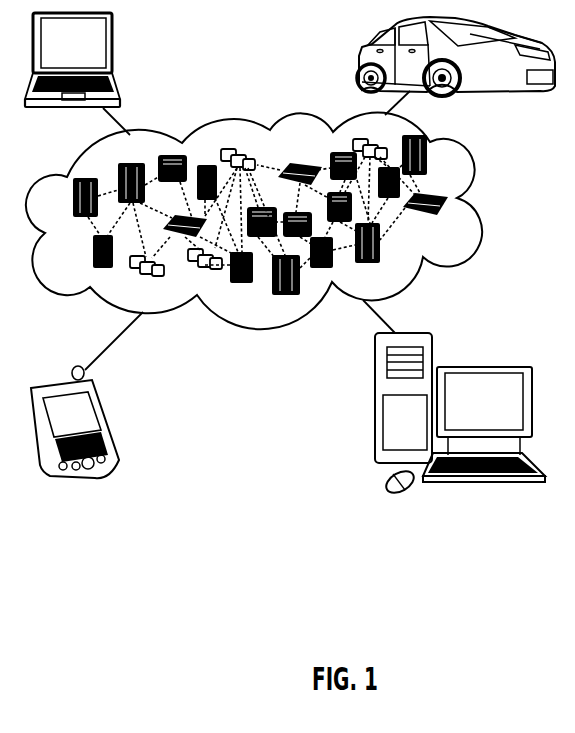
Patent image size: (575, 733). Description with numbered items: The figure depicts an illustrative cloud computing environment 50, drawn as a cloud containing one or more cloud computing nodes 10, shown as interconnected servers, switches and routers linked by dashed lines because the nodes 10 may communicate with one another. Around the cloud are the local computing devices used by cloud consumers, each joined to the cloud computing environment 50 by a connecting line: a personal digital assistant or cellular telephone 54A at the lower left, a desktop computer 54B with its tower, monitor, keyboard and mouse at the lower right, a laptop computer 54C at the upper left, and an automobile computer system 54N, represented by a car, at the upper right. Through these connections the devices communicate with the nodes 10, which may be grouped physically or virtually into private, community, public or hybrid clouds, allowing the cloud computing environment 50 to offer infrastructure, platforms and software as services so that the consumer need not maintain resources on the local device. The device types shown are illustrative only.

The cloud computing nodes 10 is at (458, 224).
The cloud computing environment 50 is at (484, 206).
The personal digital assistant (PDA) or cellular telephone 54A is at (107, 423).
The desktop computer 54B is at (480, 367).
The laptop computer 54C is at (115, 50).
The automobile computer system 54N is at (357, 58).